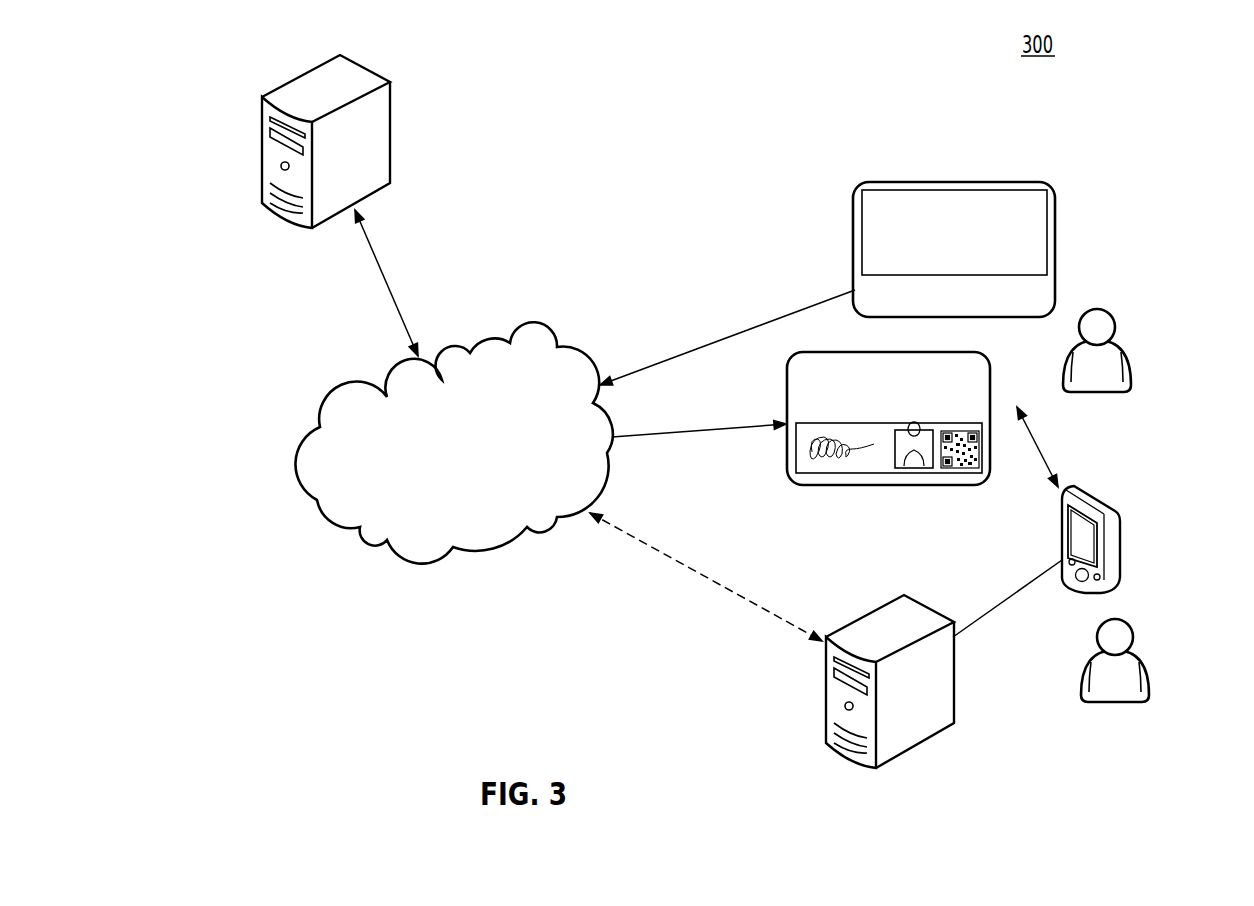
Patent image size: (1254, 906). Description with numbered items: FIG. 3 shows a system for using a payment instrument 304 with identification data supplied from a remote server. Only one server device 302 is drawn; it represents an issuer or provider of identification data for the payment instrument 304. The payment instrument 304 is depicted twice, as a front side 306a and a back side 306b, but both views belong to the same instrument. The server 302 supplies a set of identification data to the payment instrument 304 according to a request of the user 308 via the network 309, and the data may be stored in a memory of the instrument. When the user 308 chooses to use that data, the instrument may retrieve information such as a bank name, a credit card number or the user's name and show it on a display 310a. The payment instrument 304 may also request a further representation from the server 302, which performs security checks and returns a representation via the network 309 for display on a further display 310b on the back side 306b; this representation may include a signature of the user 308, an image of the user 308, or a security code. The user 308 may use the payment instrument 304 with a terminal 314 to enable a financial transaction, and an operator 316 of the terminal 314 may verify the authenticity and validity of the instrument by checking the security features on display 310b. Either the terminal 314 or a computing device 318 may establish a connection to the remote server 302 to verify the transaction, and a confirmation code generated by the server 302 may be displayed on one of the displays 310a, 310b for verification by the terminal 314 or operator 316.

The server device 302 is at (260, 112).
The payment instrument 304 is at (1100, 203).
The front side 306a is at (972, 249).
The back side 306b is at (881, 453).
The user 308 is at (1127, 360).
The network 309 is at (297, 473).
The display 310a is at (860, 213).
The further display 310b is at (860, 473).
The terminal 314 is at (1118, 543).
The operator 316 is at (1145, 680).
The computing device 318 is at (943, 737).